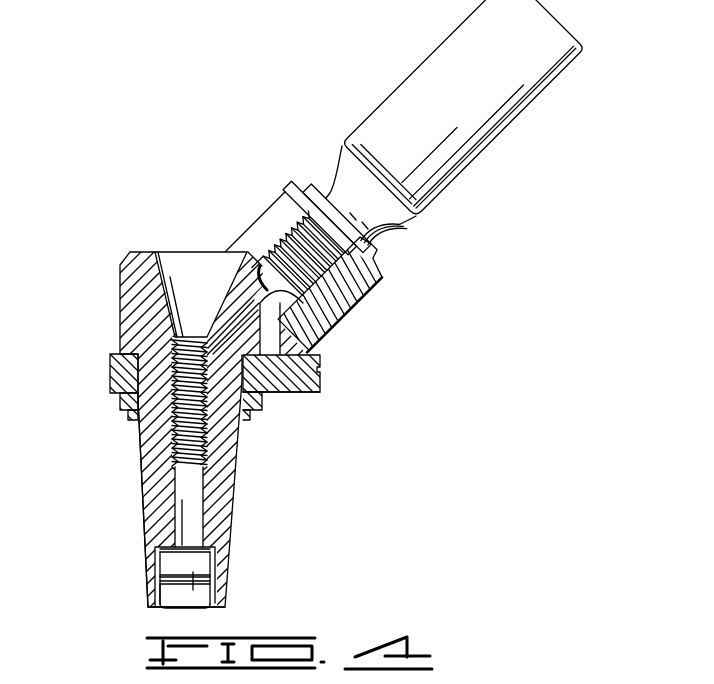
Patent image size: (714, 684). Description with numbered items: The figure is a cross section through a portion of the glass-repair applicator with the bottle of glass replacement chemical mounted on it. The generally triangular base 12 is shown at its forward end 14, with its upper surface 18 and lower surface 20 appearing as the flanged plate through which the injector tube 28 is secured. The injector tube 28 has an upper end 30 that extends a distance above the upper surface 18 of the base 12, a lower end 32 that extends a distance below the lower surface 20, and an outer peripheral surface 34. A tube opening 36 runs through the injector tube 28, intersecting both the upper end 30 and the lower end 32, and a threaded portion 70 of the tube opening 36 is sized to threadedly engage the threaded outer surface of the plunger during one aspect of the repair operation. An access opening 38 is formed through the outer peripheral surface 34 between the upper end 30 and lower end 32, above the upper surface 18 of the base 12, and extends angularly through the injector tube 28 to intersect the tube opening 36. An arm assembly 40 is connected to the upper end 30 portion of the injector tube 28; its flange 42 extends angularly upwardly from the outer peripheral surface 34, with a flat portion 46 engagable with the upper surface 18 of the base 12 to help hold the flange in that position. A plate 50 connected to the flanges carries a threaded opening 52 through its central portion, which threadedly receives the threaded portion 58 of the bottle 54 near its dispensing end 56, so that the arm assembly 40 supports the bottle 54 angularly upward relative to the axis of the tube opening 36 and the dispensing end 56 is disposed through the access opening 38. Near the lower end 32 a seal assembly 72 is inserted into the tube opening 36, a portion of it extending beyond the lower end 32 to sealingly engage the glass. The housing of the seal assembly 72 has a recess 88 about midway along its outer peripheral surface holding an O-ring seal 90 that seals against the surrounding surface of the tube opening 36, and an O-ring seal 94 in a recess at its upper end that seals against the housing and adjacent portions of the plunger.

The base 12 is at (290, 382).
The forward end 14 is at (110, 370).
The upper surface 18 is at (303, 348).
The lower surface 20 is at (315, 393).
The injector tube 28 is at (122, 277).
The upper end 30 is at (142, 252).
The lower end 32 is at (150, 607).
The outer peripheral surface 34 is at (140, 483).
The tube opening 36 is at (197, 518).
The access opening 38 is at (237, 262).
The arm assembly 40 is at (384, 289).
The flange 42 is at (277, 208).
The flat portion 46 is at (262, 395).
The plate 50 is at (370, 273).
The threaded opening 52 is at (363, 238).
The bottle 54 is at (535, 68).
The dispensing end 56 is at (260, 255).
The threaded portion 58 is at (340, 282).
The threaded portion 70 is at (183, 420).
The seal assembly 72 is at (155, 565).
The recess 88 is at (193, 585).
The O-ring seal 90 is at (200, 610).
The O-ring seal 94 is at (167, 547).